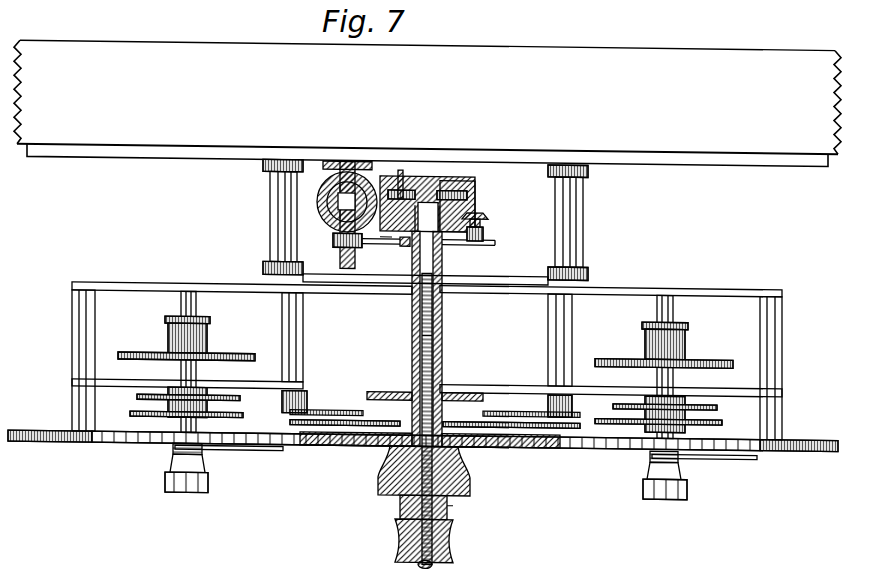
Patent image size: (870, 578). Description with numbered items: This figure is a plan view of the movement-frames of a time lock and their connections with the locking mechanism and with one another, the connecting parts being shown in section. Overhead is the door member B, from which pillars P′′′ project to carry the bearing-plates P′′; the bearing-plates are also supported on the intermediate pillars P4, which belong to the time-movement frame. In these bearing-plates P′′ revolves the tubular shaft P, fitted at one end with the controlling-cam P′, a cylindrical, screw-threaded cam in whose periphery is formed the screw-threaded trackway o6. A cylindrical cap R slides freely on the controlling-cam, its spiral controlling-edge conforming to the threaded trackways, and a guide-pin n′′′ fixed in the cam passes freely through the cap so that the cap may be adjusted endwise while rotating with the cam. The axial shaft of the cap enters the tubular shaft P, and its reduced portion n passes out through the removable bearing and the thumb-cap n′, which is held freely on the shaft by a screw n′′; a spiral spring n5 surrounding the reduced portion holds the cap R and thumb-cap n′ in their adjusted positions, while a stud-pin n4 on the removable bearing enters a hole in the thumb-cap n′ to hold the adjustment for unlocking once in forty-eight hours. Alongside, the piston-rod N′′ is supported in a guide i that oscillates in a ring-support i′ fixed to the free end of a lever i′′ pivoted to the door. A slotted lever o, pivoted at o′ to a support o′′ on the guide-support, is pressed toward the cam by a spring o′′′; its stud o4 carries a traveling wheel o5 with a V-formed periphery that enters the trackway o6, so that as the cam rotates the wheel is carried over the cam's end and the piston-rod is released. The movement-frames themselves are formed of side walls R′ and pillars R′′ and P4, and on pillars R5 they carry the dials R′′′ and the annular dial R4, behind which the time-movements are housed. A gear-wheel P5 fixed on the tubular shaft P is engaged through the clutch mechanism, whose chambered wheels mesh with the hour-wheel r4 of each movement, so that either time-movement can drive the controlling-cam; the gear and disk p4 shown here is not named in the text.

The beam B is at (427, 103).
The guide i is at (339, 225).
The ring-support i′ is at (338, 197).
The lever i′′ is at (328, 165).
The piston-rod N′′ is at (347, 202).
The cylindrical cap R is at (427, 196).
The controlling-cam P′ is at (476, 200).
The guide-pin n′′′ is at (455, 258).
The tubular shaft P is at (433, 326).
The reduced portion of the shaft n is at (421, 327).
The spiral spring n5 is at (434, 351).
The support o′′ is at (332, 238).
The pivot o′ is at (378, 240).
The spring o′′′ is at (404, 242).
The screw-threaded trackway o6 is at (382, 230).
The slotted lever o is at (487, 238).
The stud o4 is at (484, 228).
The traveling wheel o5 is at (489, 210).
The pillars P′′′ is at (428, 220).
The bearing-plates P′′ is at (425, 335).
The side walls R′ is at (427, 337).
The pillars R5 is at (72, 410).
The pillars R′′ is at (425, 364).
The intermediate pillars P4 is at (427, 339).
The gear-wheel P5 is at (425, 406).
The gear and disk p4 is at (129, 412).
The hour-wheel r4 is at (722, 413).
The dials R′′′ is at (423, 466).
The dial R4 is at (435, 444).
The thumb-cap n′ is at (440, 494).
The stud-pin n4 is at (457, 511).
The screw n′′ is at (424, 569).